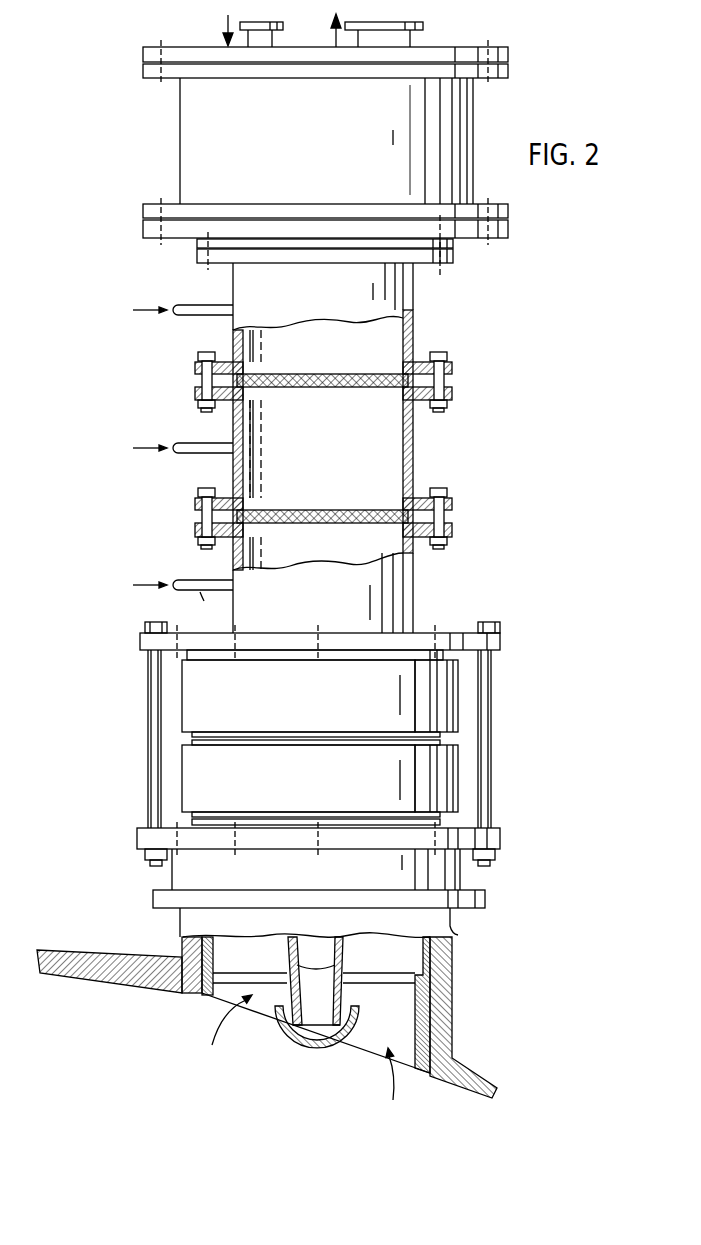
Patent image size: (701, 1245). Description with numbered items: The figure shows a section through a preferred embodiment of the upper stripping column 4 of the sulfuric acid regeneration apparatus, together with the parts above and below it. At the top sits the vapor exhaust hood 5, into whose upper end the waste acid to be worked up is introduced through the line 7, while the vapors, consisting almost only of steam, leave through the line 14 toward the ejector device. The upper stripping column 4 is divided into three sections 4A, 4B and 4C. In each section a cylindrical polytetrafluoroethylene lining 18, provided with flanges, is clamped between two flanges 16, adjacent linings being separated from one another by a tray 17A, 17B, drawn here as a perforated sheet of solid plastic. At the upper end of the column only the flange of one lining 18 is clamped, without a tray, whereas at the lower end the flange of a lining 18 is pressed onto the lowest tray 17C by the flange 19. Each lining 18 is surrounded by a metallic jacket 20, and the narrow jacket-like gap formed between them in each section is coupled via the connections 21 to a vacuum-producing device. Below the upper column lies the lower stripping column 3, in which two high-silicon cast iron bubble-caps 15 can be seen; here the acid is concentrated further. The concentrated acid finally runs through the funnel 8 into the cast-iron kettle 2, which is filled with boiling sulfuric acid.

The cast-iron kettle 2 is at (115, 982).
The lower stripping column 3 is at (509, 766).
The upper stripping column 4 is at (481, 470).
The first section of upper stripping column 4A is at (341, 305).
The second section of upper stripping column 4B is at (341, 457).
The third section of upper stripping column 4C is at (341, 608).
The vapor exhaust hood 5 is at (180, 135).
The line 7 is at (276, 42).
The funnel 8 is at (343, 993).
The line 14 is at (414, 45).
The high-silicon cast iron bubble-caps 15 is at (182, 752).
The flanges 16 is at (455, 242).
The tray 17A is at (360, 388).
The tray 17B is at (213, 518).
The lowest tray 17C is at (452, 655).
The polytetrafluoroethylene lining 18 is at (403, 339).
The flange 19 is at (140, 638).
The metallic jacket 20 is at (413, 323).
The connections 21 is at (177, 316).